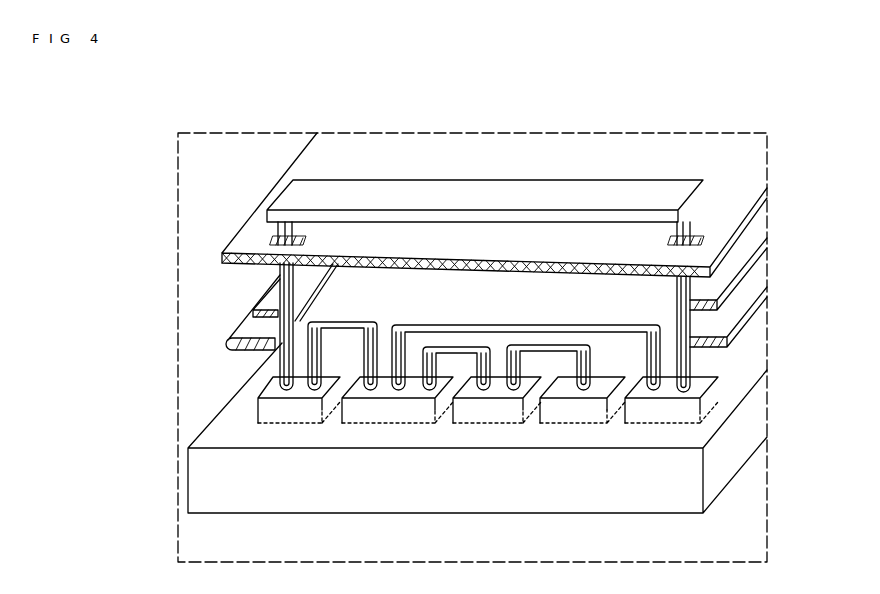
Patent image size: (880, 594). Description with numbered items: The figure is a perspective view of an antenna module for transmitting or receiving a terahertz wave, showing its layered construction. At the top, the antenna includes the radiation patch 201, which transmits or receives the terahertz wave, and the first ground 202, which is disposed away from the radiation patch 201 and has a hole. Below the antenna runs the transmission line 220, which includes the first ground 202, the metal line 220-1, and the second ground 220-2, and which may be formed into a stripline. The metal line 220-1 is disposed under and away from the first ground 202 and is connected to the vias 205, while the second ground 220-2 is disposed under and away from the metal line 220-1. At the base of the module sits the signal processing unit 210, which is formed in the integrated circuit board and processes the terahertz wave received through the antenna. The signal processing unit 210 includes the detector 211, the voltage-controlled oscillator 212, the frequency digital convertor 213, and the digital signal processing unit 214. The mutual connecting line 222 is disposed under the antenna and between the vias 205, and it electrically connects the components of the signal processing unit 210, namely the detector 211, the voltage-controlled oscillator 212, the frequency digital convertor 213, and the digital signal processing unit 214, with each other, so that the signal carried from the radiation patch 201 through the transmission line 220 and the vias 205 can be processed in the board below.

The radiation patch 201 is at (664, 185).
The first ground 202 is at (735, 201).
The vias 205 is at (670, 237).
The signal processing unit 210 is at (762, 423).
The detector 211 is at (650, 412).
The voltage-controlled oscillator 212 is at (380, 418).
The frequency digital convertor 213 is at (463, 420).
The digital signal processing unit 214 is at (563, 420).
The transmission line 220 is at (70, 283).
The metal line 220-1 is at (677, 284).
The second ground 220-2 is at (677, 297).
The mutual connecting line 222 is at (707, 387).